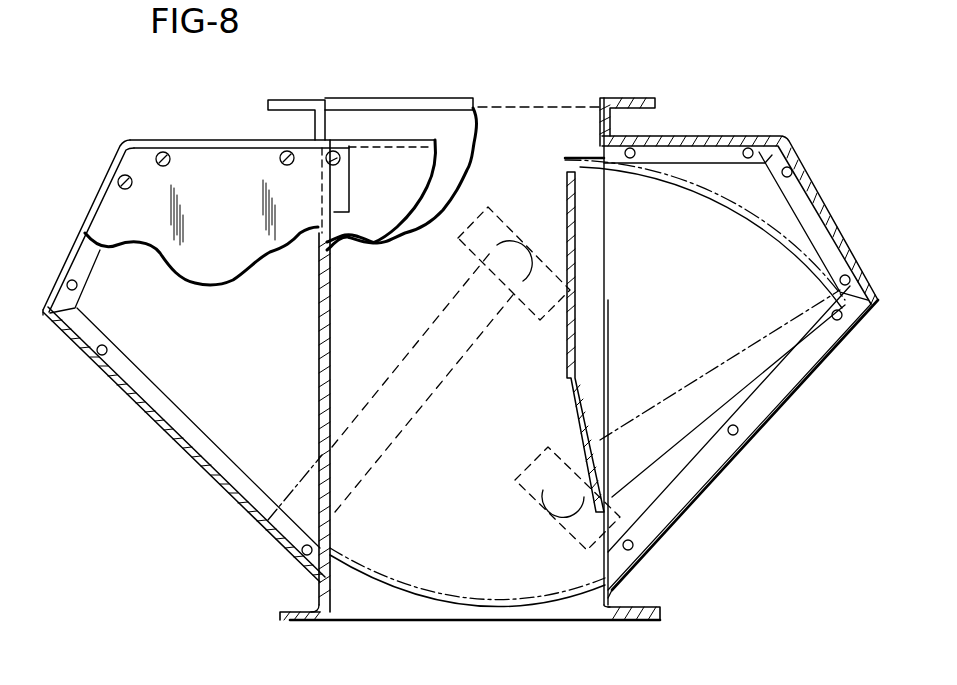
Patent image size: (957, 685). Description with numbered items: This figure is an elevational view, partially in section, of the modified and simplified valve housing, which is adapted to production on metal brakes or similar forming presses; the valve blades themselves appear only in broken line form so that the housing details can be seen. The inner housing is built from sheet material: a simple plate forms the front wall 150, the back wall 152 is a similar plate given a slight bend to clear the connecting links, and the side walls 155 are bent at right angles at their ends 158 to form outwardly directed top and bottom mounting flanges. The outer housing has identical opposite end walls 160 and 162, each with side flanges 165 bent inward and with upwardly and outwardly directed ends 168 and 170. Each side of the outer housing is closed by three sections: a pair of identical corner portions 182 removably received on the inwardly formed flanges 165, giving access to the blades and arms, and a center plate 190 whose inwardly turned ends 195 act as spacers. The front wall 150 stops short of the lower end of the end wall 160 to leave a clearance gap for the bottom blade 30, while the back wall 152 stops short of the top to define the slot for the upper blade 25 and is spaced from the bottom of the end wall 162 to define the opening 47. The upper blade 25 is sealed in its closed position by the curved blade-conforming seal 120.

The curved flow control blade 25 is at (707, 193).
The second curved flow-control blade 30 is at (444, 598).
The opening 47 is at (598, 525).
The curved blade-conforming seal 120 is at (330, 538).
The front wall 150 is at (322, 335).
The back wall 152 is at (568, 390).
The side walls 155 is at (565, 120).
The ends 158 is at (510, 105).
The end wall 160 is at (78, 238).
The end wall 162 is at (773, 133).
The side flanges 165 is at (85, 262).
The end 168 is at (288, 100).
The end 170 is at (302, 617).
The corner portions 182 is at (147, 182).
The center plates 190 is at (372, 215).
The inwardly turned ends 195 is at (385, 140).